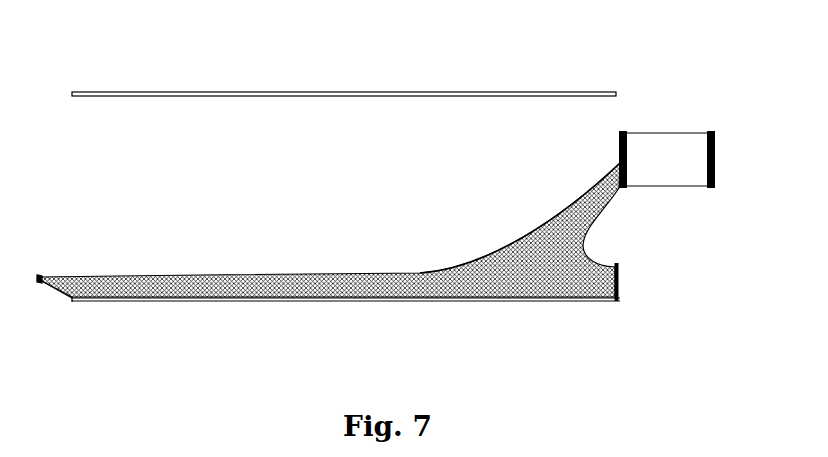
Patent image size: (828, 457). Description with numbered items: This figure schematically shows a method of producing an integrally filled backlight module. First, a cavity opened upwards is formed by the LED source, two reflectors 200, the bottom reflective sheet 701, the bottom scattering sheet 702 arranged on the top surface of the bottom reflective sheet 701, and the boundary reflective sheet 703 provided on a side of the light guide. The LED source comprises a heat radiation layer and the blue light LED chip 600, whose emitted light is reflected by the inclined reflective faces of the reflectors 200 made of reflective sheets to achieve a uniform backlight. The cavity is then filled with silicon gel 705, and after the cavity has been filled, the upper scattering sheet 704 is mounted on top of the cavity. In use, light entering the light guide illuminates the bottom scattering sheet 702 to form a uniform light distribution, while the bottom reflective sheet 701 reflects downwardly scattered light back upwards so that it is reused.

The upper scattering sheet 704 is at (344, 92).
The silicon gel 705 is at (548, 219).
The boundary reflective sheet 703 is at (620, 283).
The bottom scattering sheet 702 is at (475, 297).
The bottom reflective sheet 701 is at (342, 302).
The blue light LED chip 600 is at (40, 283).
The reflector 200 is at (40, 277).